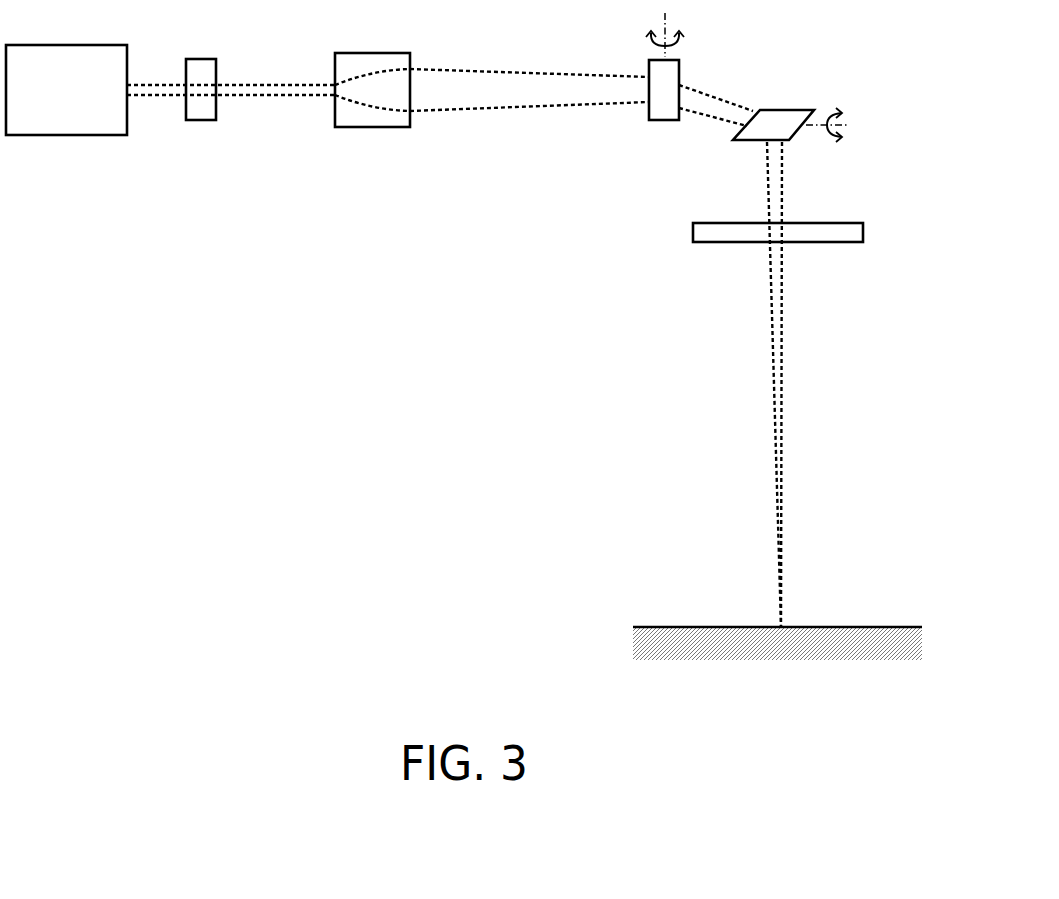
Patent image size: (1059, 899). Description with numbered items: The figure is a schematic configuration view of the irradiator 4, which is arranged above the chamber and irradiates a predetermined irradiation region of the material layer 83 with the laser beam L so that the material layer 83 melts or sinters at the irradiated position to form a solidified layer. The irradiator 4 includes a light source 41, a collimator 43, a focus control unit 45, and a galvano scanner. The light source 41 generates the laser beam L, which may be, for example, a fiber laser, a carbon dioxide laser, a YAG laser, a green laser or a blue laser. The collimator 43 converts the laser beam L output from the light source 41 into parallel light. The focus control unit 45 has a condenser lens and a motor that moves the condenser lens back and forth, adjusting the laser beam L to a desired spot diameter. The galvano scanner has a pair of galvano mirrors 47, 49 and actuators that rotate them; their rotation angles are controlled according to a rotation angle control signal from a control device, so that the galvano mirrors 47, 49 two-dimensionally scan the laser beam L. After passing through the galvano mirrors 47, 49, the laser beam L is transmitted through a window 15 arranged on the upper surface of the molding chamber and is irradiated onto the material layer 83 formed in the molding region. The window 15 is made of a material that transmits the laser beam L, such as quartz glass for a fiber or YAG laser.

The irradiator 4 is at (360, 291).
The window 15 is at (708, 233).
The light source 41 is at (36, 128).
The collimator 43 is at (207, 117).
The focus control unit 45 is at (345, 120).
The galvano mirror 47 is at (660, 115).
The galvano mirror 49 is at (797, 118).
The material layer 83 is at (685, 634).
The laser beam L is at (784, 404).